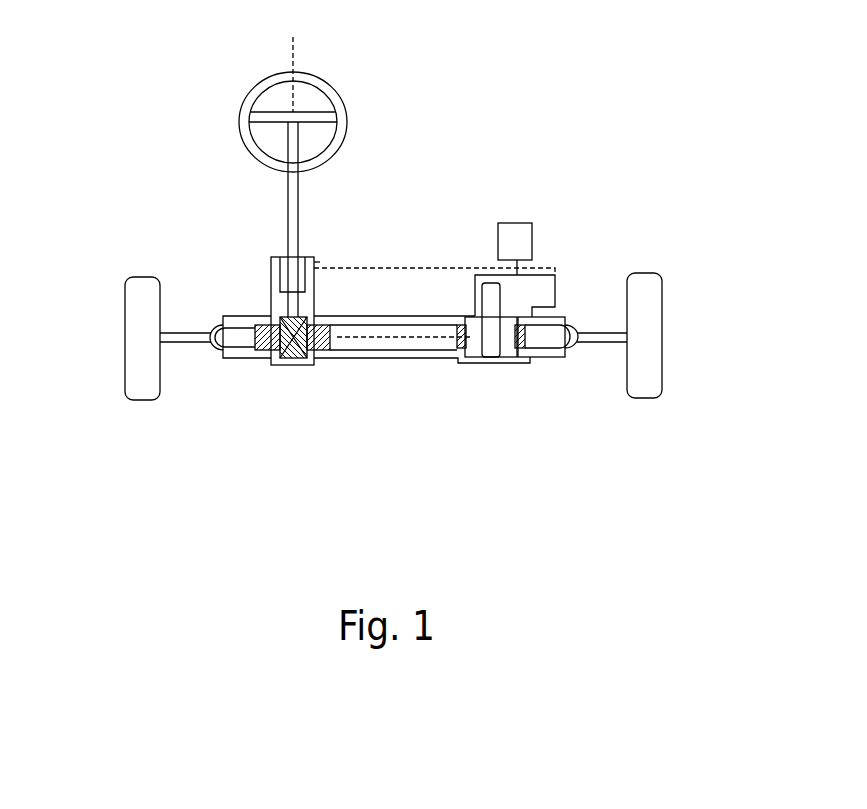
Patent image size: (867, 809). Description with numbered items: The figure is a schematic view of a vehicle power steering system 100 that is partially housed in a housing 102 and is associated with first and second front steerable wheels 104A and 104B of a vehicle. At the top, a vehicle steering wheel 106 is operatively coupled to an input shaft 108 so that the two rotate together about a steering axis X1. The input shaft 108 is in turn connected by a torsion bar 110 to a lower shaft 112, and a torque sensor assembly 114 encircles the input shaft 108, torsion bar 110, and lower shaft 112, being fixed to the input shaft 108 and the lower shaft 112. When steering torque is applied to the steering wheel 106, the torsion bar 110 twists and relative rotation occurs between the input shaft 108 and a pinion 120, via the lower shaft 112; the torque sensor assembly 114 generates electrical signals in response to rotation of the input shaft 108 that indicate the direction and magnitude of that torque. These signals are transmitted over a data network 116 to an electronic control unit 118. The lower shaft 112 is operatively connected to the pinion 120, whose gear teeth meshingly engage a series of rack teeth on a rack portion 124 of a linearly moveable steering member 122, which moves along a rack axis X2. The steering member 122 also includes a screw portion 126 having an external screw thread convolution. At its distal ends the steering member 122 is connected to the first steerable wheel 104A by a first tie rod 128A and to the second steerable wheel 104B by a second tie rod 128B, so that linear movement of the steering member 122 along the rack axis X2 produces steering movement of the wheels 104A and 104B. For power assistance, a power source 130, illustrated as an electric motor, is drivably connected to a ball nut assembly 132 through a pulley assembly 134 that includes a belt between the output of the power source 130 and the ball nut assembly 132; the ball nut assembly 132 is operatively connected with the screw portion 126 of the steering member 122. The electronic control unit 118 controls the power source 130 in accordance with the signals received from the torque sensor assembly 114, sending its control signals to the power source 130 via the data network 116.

The power steering system 100 is at (470, 132).
The housing 102 is at (378, 433).
The first front steerable wheel 104A is at (123, 328).
The second front steerable wheel 104B is at (663, 330).
The vehicle steering wheel 106 is at (347, 118).
The input shaft 108 is at (283, 212).
The torsion bar 110 is at (267, 277).
The lower shaft 112 is at (283, 305).
The torque sensor assembly 114 is at (322, 257).
The data network 116 is at (428, 268).
The electronic control unit 118 is at (515, 223).
The pinion 120 is at (287, 365).
The steering member 122 is at (347, 362).
The rack portion 124 is at (270, 362).
The screw portion 126 is at (520, 358).
The first tie rod 128A is at (177, 347).
The second tie rod 128B is at (610, 345).
The power source 130 is at (547, 292).
The ball nut assembly 132 is at (508, 363).
The pulley assembly 134 is at (490, 357).
The steering axis X1 is at (293, 104).
The rack axis X2 is at (380, 337).